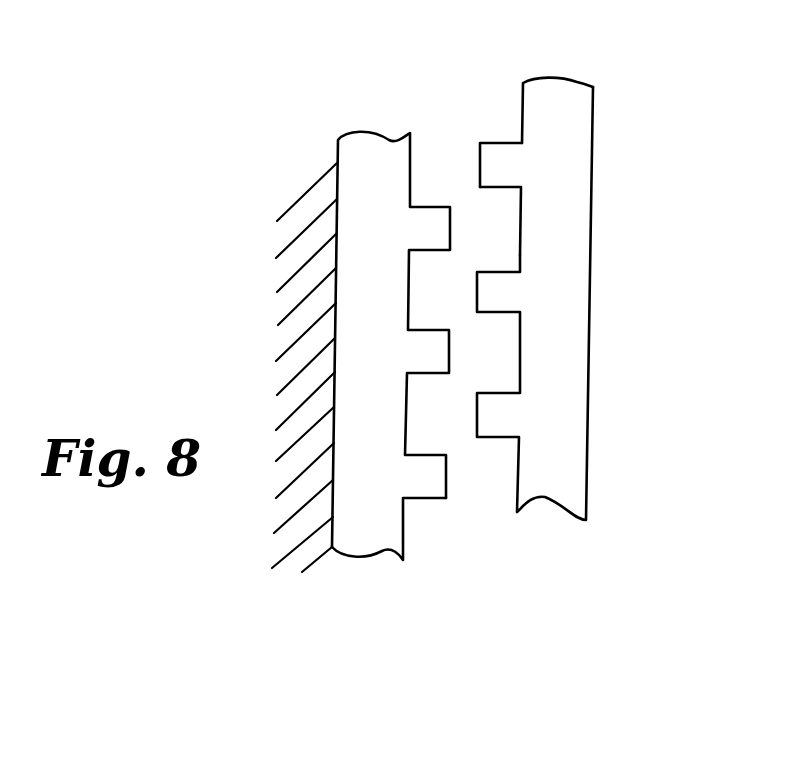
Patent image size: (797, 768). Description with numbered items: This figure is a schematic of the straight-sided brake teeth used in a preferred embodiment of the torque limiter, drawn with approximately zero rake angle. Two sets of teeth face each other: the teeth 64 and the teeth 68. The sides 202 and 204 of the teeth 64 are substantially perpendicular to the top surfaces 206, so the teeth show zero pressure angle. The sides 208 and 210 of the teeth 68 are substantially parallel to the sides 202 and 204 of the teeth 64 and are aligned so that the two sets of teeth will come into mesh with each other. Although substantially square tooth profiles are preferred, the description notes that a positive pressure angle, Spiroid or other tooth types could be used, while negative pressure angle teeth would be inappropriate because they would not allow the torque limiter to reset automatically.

The teeth 64 is at (480, 170).
The teeth 68 is at (448, 487).
The side 202 is at (483, 142).
The side 204 is at (497, 188).
The top surface 206 is at (522, 116).
The side 208 is at (422, 500).
The side 210 is at (260, 367).